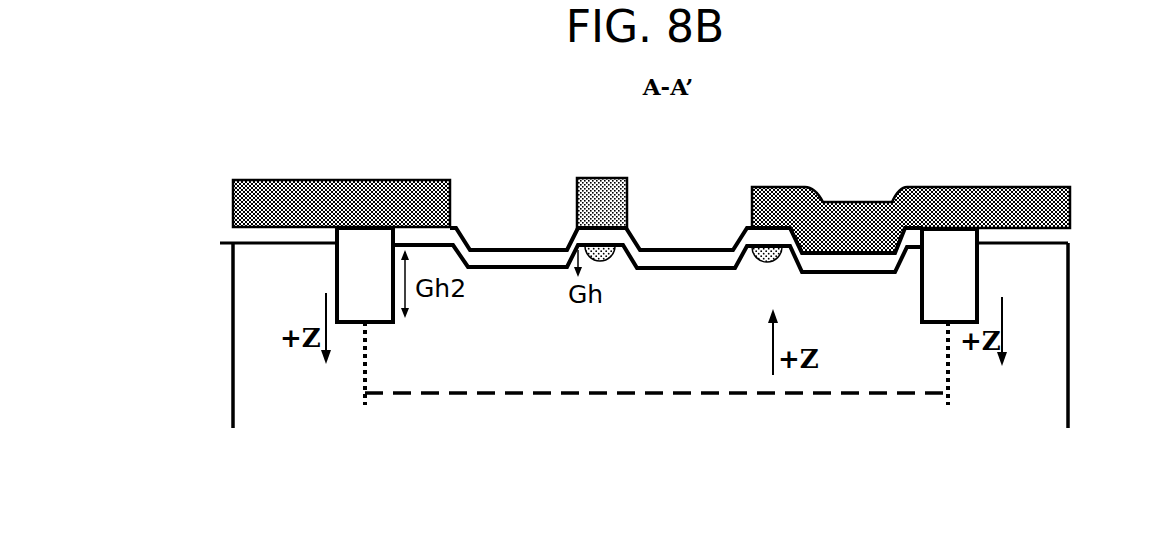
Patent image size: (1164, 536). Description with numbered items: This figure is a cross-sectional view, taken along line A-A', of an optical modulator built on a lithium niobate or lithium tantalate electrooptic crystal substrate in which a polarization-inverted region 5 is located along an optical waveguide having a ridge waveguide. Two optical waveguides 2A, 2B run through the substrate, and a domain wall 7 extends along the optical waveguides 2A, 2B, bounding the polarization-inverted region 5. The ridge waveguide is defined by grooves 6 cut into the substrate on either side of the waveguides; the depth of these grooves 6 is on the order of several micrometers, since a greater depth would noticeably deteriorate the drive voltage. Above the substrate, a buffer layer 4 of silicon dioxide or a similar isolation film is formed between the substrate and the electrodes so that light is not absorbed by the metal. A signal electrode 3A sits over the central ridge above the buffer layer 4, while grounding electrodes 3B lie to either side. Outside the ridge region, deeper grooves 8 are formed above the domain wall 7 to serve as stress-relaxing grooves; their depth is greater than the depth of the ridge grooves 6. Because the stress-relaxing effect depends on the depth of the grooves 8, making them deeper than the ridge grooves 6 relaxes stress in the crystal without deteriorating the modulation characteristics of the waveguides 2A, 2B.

The optical waveguide 2A is at (760, 263).
The optical waveguide 2B is at (608, 263).
The signal electrode 3A is at (597, 178).
The grounding electrode 3B is at (651, 198).
The buffer layer 4 is at (628, 232).
The polarization-inverted region 5 is at (529, 349).
The grooves 6 is at (525, 260).
The domain wall 7 is at (367, 380).
The grooves 8 is at (367, 270).